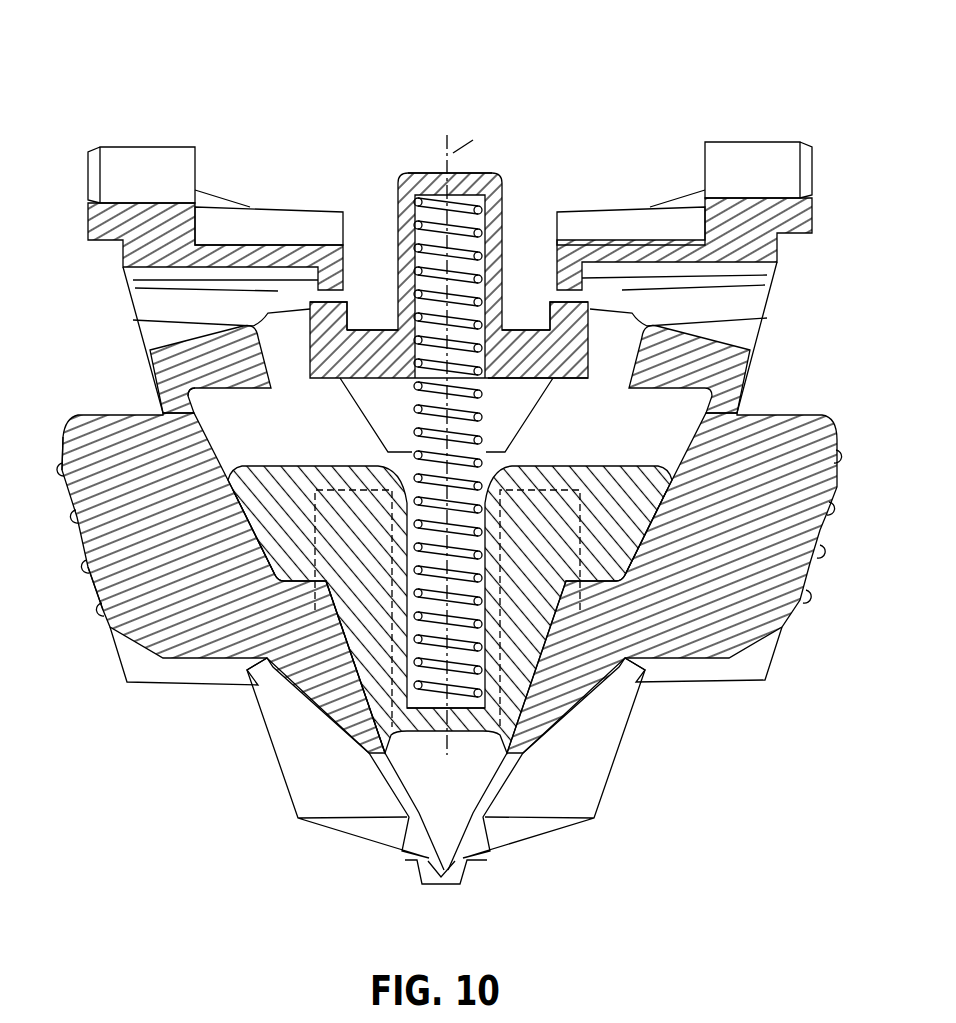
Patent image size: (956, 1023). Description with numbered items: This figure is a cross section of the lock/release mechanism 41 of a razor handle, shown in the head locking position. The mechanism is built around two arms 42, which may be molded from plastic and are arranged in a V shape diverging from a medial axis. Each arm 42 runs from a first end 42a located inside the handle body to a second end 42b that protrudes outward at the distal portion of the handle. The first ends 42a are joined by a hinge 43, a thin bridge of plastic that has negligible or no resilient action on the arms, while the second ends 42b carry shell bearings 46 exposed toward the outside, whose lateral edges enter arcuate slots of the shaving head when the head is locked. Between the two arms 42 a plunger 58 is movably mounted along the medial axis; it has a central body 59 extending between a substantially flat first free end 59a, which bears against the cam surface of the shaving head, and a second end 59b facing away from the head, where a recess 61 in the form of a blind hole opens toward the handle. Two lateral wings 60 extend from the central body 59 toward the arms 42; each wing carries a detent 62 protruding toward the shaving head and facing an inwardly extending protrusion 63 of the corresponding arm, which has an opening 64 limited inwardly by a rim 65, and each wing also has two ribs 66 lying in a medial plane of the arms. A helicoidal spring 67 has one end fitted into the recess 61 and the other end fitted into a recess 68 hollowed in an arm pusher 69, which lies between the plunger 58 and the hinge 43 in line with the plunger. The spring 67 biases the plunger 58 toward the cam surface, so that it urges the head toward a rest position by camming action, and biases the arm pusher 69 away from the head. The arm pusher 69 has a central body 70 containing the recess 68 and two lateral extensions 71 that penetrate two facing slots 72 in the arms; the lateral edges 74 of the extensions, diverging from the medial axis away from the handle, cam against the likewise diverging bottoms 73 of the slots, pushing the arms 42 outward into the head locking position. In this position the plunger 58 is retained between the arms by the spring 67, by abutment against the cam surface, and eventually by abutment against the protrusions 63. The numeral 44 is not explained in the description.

The lock/release mechanism 41 is at (638, 86).
The arm 42 is at (158, 366).
The first end 42a is at (325, 828).
The second end 42b is at (128, 246).
The hinge 43 is at (442, 888).
The threaded lower body 44 is at (77, 490).
The shell bearing 46 is at (148, 158).
The plunger 58 is at (518, 162).
The central body 59 is at (501, 200).
The first free end 59a is at (432, 172).
The second end 59b is at (492, 366).
The lateral wing 60 is at (352, 368).
The recess 61 is at (404, 360).
The detent 62 is at (200, 338).
The protrusion 63 is at (292, 247).
The opening 64 is at (278, 292).
The rim 65 is at (140, 281).
The rib 66 is at (393, 424).
The spring 67 is at (490, 262).
The recess 68 is at (527, 677).
The arm pusher 69 is at (398, 745).
The central body 70 is at (382, 678).
The lateral extension 71 is at (290, 537).
The slot 72 is at (225, 430).
The bottom 73 is at (72, 469).
The lateral edge 74 is at (200, 552).